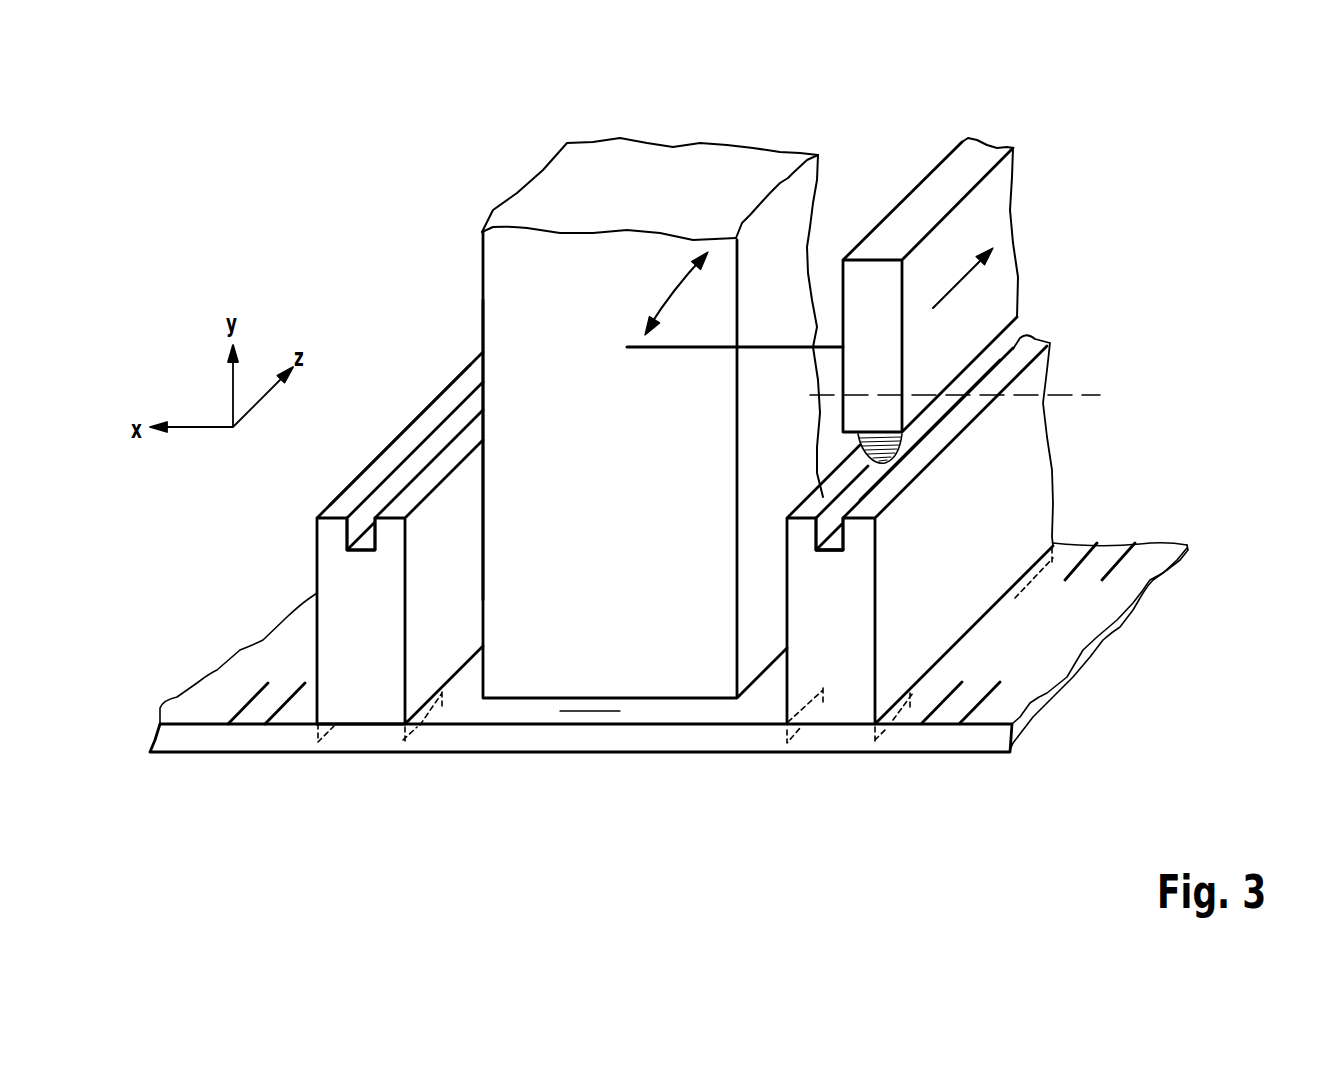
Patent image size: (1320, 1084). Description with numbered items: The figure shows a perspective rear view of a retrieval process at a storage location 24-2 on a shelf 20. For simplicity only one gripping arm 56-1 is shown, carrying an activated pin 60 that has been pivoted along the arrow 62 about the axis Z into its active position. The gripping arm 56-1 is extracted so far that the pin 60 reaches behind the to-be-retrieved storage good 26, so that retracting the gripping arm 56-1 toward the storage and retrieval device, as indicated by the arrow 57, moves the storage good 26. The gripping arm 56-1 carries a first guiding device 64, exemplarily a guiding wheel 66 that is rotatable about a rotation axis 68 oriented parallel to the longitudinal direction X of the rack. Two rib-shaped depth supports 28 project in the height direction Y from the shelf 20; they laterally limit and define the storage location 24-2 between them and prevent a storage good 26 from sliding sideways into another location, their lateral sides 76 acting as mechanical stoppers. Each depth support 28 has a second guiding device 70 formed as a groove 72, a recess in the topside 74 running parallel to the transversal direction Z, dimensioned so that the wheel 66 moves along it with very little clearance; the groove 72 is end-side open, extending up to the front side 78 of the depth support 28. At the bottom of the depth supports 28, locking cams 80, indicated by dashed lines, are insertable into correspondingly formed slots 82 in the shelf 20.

The shelf 20 is at (957, 755).
The storage location 24-2 is at (590, 705).
The storage good 26 is at (710, 142).
The depth support 28 is at (317, 545).
The gripping arm 56-1 is at (925, 173).
The arrow 57 is at (962, 284).
The pin 60 is at (667, 350).
The arrow 62 is at (673, 290).
The first guiding device 64 is at (943, 433).
The guiding wheel 66 is at (857, 440).
The rotation axis 68 is at (1085, 395).
The second guiding device 70 is at (363, 513).
The groove 72 is at (827, 552).
The topside 74 is at (425, 427).
The lateral side 76 is at (307, 627).
The front side 78 is at (360, 692).
The locking cam 80 is at (418, 727).
The slot 82 is at (247, 712).